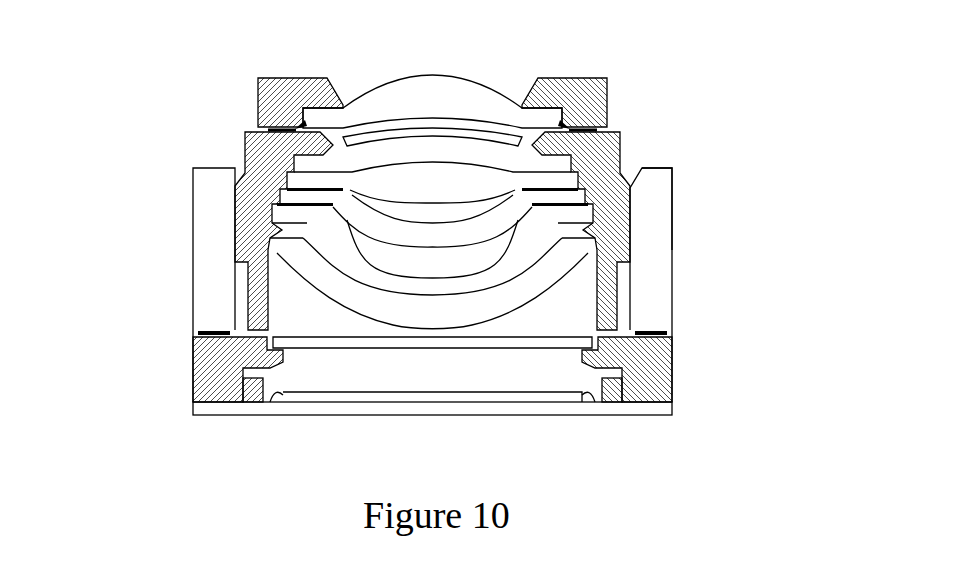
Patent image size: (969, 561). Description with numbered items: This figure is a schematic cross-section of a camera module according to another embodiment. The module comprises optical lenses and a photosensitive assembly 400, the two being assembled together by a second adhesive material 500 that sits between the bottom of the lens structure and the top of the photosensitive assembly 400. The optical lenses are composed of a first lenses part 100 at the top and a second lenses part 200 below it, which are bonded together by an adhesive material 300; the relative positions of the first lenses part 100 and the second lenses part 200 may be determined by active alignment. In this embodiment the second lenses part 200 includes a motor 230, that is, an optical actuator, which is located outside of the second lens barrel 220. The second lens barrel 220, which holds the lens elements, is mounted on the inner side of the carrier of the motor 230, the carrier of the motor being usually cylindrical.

The first lenses part 100 is at (616, 90).
The second lenses part 200 is at (677, 248).
The second lens barrel 220 is at (253, 185).
The motor 230 is at (653, 182).
The adhesive material 300 is at (600, 128).
The photosensitive assembly 400 is at (672, 380).
The second adhesive material 500 is at (193, 333).